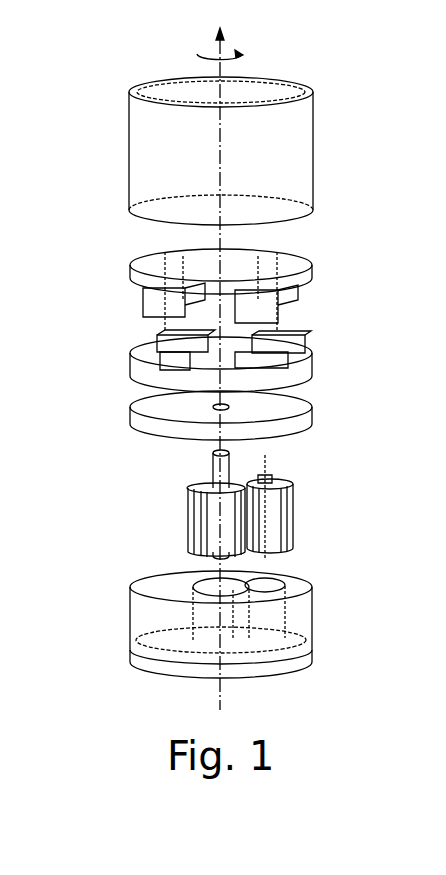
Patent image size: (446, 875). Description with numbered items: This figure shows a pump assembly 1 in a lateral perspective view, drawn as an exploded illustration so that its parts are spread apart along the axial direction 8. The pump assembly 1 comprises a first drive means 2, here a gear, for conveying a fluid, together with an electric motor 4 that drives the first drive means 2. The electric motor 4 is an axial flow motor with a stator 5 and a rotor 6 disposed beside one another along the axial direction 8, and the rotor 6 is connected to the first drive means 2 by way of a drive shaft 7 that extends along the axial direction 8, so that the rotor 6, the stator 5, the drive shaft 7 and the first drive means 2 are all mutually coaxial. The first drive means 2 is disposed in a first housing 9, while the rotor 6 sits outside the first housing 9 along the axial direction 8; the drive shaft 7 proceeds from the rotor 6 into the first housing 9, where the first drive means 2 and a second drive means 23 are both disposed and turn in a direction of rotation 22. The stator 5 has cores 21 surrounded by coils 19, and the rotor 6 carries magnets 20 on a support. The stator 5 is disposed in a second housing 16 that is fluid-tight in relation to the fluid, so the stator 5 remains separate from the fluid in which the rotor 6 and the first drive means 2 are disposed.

The pump assembly 1 is at (338, 104).
The first drive means 2 is at (255, 504).
The electric motor 4 is at (240, 325).
The stator 5 is at (308, 278).
The rotor 6 is at (290, 375).
The drive shaft 7 is at (214, 470).
The axial direction 8 is at (231, 361).
The first housing 9 is at (310, 423).
The second housing 16 is at (275, 193).
The coils 19 is at (278, 303).
The magnets 20 is at (157, 348).
The cores 21 is at (143, 300).
The direction of rotation 22 is at (237, 58).
The second drive means 23 is at (295, 515).